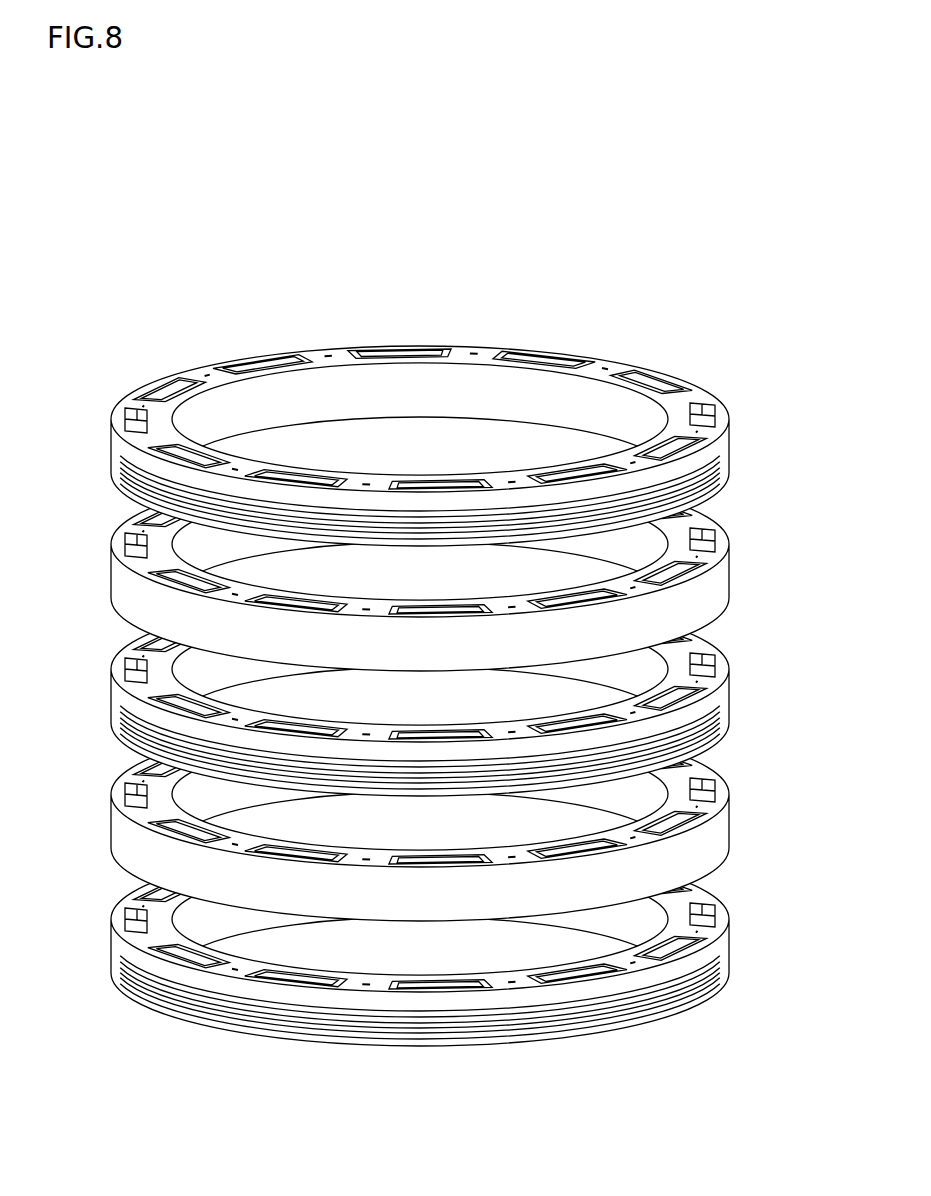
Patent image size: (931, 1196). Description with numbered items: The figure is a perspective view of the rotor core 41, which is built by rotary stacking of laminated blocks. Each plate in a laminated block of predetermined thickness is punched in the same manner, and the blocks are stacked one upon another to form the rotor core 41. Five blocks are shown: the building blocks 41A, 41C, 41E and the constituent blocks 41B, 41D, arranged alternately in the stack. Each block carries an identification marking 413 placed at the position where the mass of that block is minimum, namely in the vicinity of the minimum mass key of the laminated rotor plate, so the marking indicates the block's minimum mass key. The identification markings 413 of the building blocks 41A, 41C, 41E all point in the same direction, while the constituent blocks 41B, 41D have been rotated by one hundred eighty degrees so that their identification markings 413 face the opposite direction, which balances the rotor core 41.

The rotor core 41 is at (112, 342).
The building block 41A is at (730, 453).
The constituent block 41B is at (730, 582).
The building block 41C is at (730, 705).
The constituent block 41D is at (730, 830).
The building block 41E is at (730, 954).
The identification marking 413 is at (707, 413).